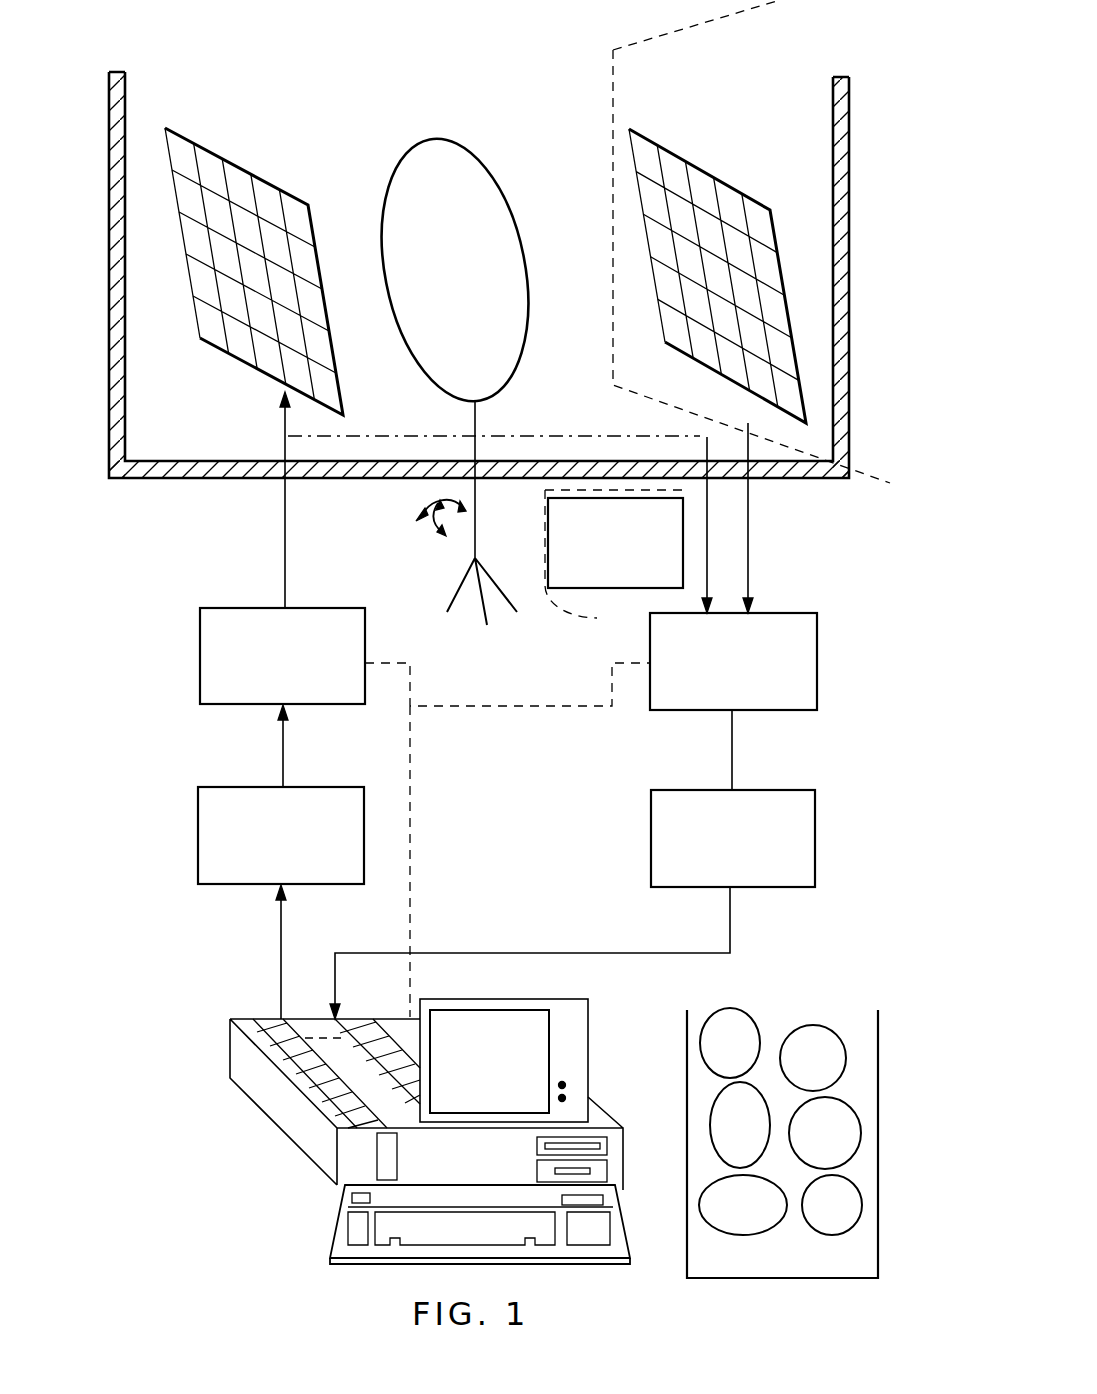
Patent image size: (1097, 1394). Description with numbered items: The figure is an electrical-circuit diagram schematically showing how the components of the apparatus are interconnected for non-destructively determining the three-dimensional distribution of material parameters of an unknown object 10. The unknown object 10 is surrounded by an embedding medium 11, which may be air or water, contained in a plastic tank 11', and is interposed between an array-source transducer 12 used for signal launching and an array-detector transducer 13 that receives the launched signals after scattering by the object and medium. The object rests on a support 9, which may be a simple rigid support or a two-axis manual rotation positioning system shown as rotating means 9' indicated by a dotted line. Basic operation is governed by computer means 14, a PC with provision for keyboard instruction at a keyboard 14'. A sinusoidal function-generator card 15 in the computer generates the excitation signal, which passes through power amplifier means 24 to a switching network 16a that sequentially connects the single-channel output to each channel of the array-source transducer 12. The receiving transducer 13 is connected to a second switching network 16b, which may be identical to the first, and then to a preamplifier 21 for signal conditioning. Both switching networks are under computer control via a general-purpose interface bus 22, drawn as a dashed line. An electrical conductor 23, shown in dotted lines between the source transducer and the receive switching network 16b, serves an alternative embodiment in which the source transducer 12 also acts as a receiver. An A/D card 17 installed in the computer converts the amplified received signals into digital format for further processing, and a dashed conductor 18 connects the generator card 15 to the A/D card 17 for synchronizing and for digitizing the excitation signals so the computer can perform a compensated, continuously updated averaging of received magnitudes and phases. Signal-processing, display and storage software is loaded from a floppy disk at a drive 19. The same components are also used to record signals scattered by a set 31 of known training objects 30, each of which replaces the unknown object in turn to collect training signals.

The support 9 is at (466, 562).
The 2-axis manual rotation positioning system 9' is at (559, 554).
The unknown object 10 is at (444, 150).
The embedding medium 11 is at (330, 102).
The plastic tank 11' is at (479, 312).
The array-source transducer 12 is at (204, 136).
The array-detector transducer 13 is at (750, 195).
The computer means 14 is at (410, 1094).
The keyboard 14' is at (431, 1224).
The sinusoidal function-generator card 15 is at (268, 1025).
The switching network 16a is at (282, 656).
The switching network 16b is at (733, 661).
The A/D card 17 is at (365, 1033).
The conductor 18 is at (323, 1037).
The floppy disk drive 19 is at (603, 1142).
The preamplifier 21 is at (733, 838).
The general-purpose interface bus 22 is at (410, 708).
The electrical conductor 23 is at (445, 432).
The power amplifier means 24 is at (281, 835).
The training objects 30 is at (800, 1028).
The training set 31 is at (812, 1282).